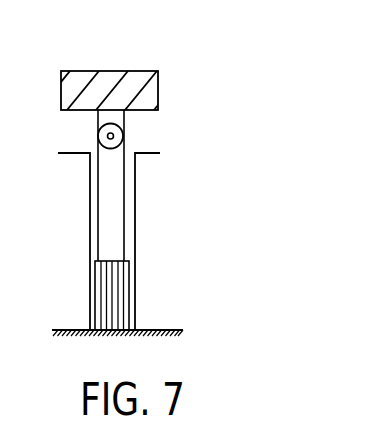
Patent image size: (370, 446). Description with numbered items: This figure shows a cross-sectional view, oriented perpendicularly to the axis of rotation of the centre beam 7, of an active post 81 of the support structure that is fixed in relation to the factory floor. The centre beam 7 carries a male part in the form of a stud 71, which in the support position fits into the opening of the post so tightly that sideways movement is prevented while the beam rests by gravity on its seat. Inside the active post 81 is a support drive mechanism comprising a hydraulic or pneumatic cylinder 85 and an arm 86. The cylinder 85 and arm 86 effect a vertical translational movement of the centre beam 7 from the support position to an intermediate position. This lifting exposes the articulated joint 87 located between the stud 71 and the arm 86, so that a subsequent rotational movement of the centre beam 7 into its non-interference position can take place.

The centre beam 7 is at (132, 80).
The stud 71 is at (96, 121).
The articulated joint 87 is at (124, 137).
The active post 81 is at (135, 212).
The arm 86 is at (105, 216).
The hydraulic or pneumatic cylinder 85 is at (102, 287).